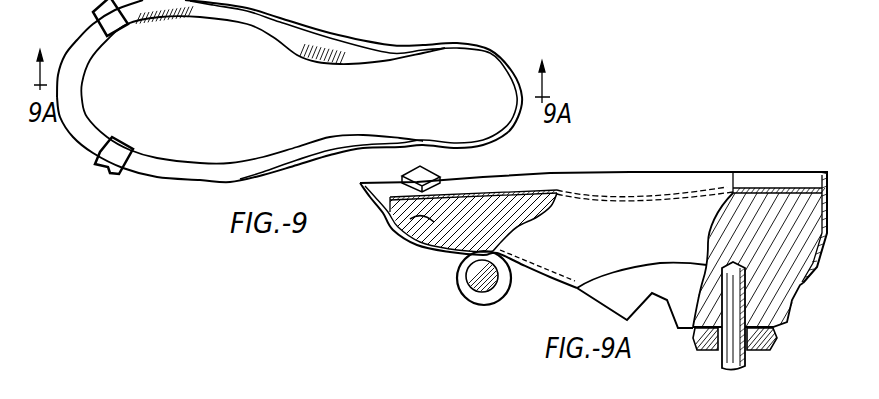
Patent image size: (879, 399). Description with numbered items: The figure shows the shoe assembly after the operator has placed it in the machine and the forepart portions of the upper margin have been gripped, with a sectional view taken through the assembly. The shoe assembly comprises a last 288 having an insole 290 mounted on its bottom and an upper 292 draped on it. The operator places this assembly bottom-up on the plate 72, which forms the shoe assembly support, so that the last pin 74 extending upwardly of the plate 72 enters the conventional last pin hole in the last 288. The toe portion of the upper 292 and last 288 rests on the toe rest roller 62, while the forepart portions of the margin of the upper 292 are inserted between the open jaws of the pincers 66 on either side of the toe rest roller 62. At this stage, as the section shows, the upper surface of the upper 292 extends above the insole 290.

In FIG. 9, the insole 290 is at (242, 93).
In FIG. 9A, the insole 290 is at (505, 186).
In FIG. 9, the upper 292 is at (300, 37).
In FIG. 9A, the upper 292 is at (615, 180).
In FIG. 9A, the pincer 66 is at (422, 175).
In FIG. 9A, the last 288 is at (407, 233).
In FIG. 9A, the toe rest roller 62 is at (480, 280).
In FIG. 9A, the last pin 74 is at (732, 308).
In FIG. 9A, the plate 72 is at (763, 343).